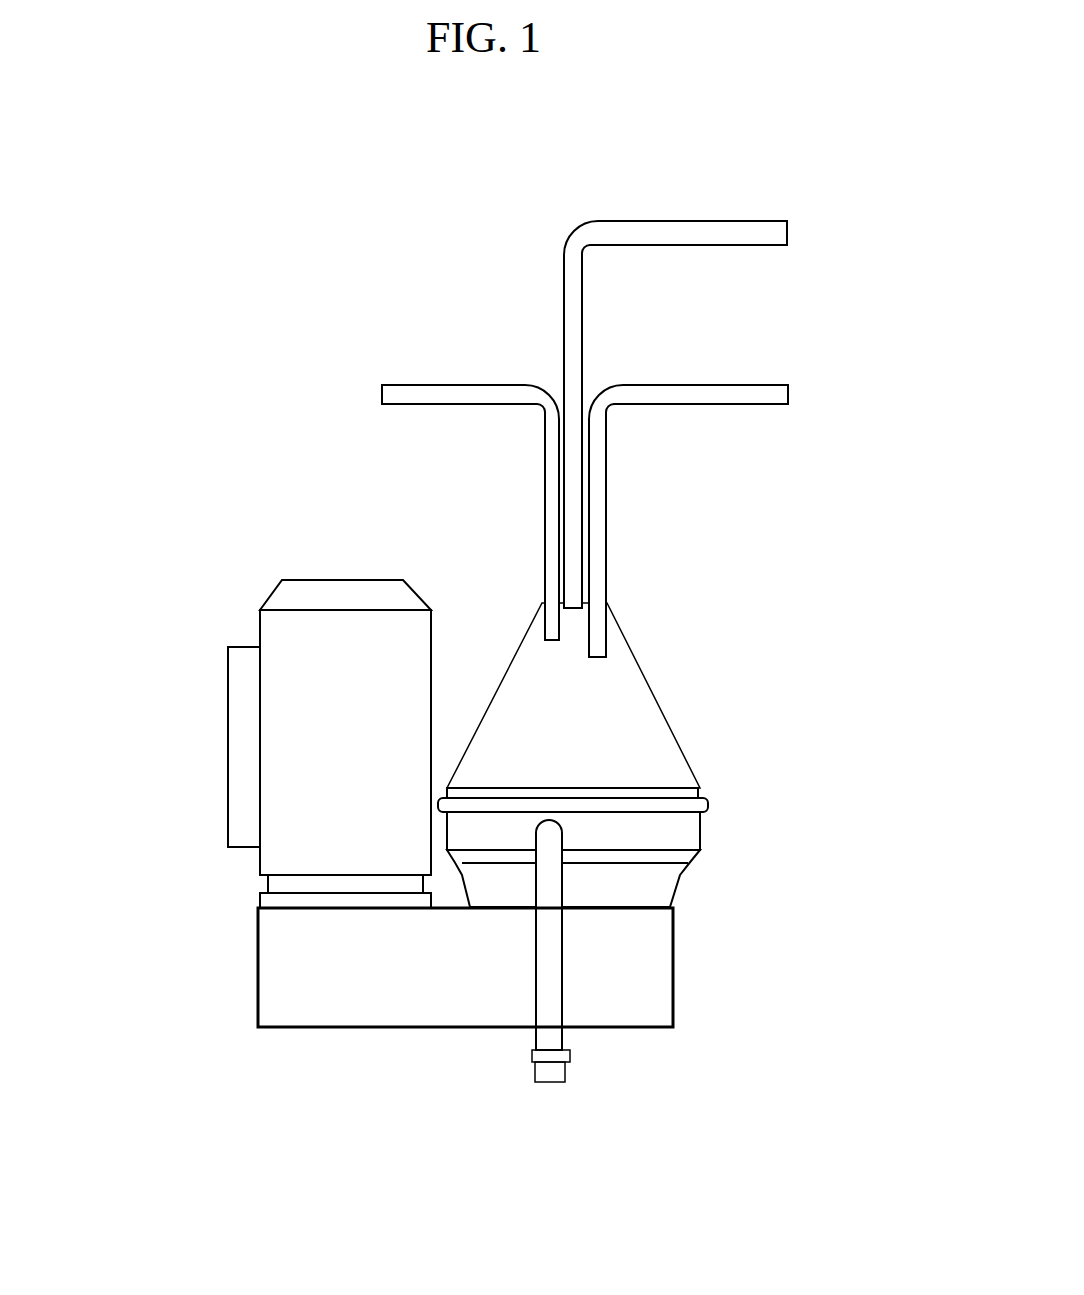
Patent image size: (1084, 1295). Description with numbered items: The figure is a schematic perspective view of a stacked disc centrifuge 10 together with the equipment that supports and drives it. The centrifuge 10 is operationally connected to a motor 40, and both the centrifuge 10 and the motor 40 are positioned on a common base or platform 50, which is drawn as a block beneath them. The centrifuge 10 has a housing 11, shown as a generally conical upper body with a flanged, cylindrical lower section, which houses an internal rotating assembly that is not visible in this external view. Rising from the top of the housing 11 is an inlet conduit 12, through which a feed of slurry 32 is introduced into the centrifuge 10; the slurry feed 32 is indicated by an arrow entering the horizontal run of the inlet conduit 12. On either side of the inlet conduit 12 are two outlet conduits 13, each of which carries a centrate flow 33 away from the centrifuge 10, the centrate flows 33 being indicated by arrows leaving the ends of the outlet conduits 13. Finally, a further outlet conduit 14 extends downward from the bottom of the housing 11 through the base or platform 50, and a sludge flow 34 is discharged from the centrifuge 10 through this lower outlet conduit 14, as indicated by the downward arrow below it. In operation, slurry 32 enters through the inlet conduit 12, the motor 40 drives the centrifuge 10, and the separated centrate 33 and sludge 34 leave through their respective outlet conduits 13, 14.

The stacked disc centrifuge 10 is at (623, 641).
The housing 11 is at (617, 695).
The inlet conduit 12 is at (622, 221).
The outlet conduits 13 is at (420, 385).
The outlet conduit 14 is at (535, 971).
The feed of slurry 32 is at (800, 233).
The centrate flow 33 is at (375, 394).
The sludge flow 34 is at (548, 1086).
The motor 40 is at (242, 572).
The base or platform 50 is at (243, 905).